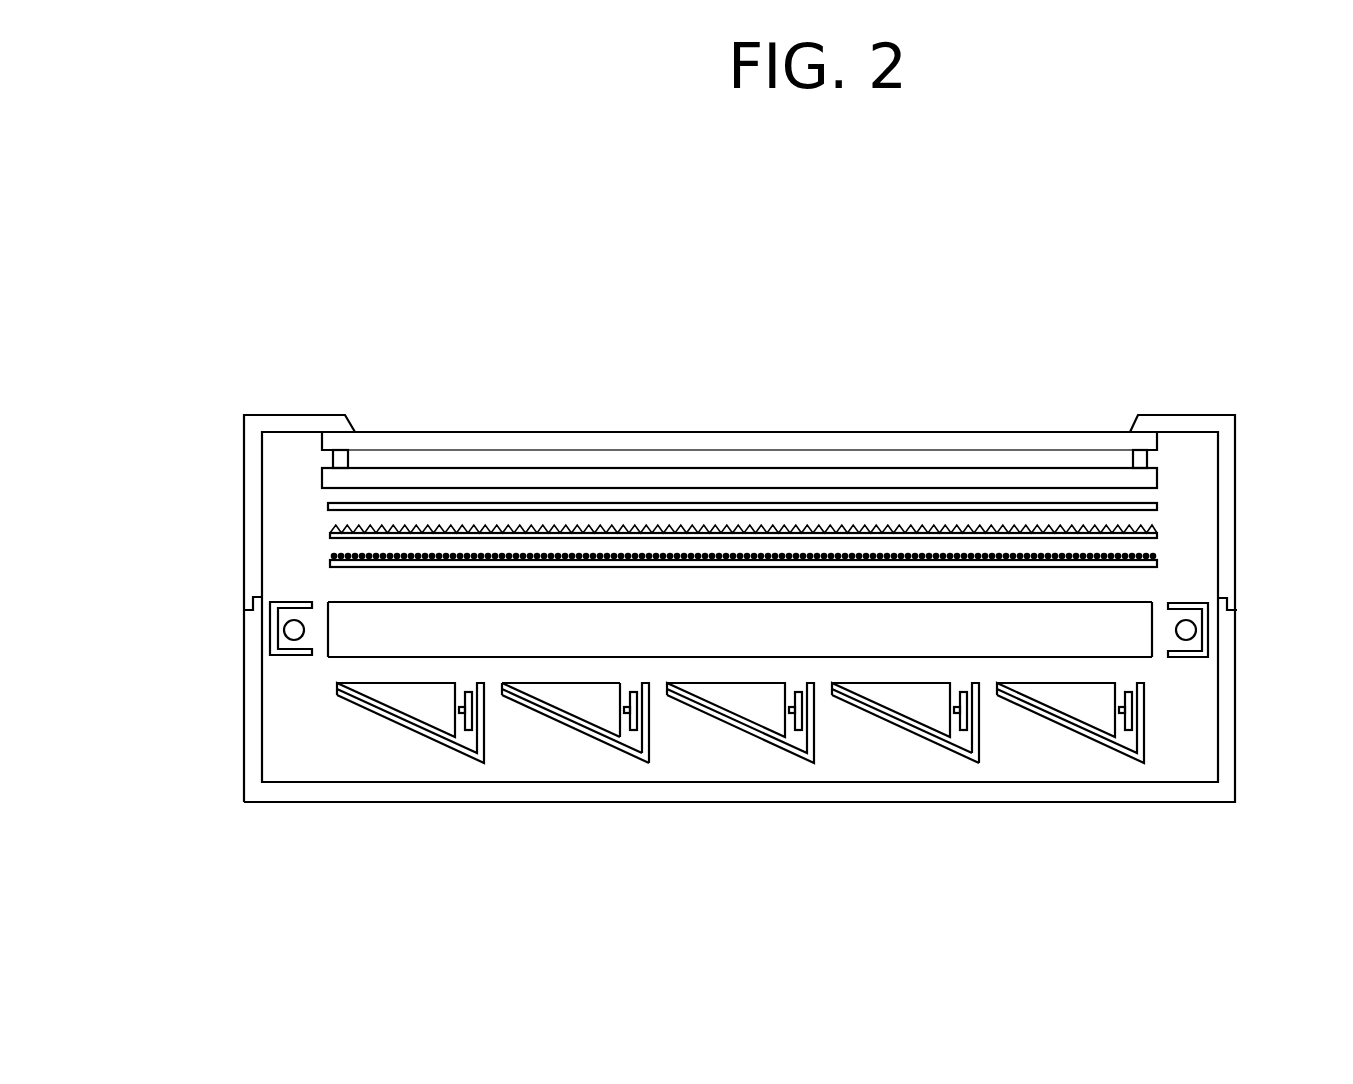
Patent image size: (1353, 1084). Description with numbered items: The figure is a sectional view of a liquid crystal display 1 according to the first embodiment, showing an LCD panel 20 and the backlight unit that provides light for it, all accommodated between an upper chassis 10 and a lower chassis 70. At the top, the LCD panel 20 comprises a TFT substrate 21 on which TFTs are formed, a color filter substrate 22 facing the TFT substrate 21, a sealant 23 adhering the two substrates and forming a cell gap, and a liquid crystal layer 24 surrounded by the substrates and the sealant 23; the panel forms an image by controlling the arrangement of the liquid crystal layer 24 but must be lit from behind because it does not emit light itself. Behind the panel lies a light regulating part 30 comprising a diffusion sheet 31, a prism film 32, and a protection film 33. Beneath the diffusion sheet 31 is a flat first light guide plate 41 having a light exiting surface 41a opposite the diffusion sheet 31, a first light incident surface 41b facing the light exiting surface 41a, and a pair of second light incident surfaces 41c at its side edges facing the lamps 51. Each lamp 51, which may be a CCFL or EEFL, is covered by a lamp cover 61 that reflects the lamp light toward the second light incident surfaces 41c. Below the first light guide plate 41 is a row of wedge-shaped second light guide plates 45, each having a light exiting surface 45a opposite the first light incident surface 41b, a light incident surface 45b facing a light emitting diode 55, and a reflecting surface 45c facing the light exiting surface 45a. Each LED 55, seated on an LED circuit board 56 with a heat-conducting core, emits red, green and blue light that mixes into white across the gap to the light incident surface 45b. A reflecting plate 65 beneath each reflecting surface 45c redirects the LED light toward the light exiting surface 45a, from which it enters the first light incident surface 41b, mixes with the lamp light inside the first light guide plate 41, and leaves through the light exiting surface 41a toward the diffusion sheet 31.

The liquid crystal display 1 is at (233, 297).
The upper chassis 10 is at (1160, 415).
The LCD panel 20 is at (739, 380).
The TFT substrate 21 is at (807, 470).
The color filter substrate 22 is at (903, 436).
The sealant 23 is at (817, 323).
The liquid crystal layer 24 is at (982, 456).
The light regulating part 30 is at (627, 511).
The diffusion sheet 31 is at (328, 563).
The prism film 32 is at (328, 536).
The protection film 33 is at (326, 507).
The first light guide plate 41 is at (735, 629).
The light exiting surface 41a is at (357, 602).
The first light incident surface 41b is at (345, 657).
The second light incident surfaces 41c is at (320, 657).
The second light guide plate 45 is at (740, 794).
The light exiting surface 45a is at (532, 794).
The light incident surface 45b is at (591, 800).
The reflecting surface 45c is at (561, 800).
The lamp 51 is at (1197, 631).
The light emitting diode 55 is at (647, 805).
The LED circuit board 56 is at (683, 800).
The lamp cover 61 is at (1212, 616).
The reflecting plate 65 is at (905, 803).
The lower chassis 70 is at (1130, 802).